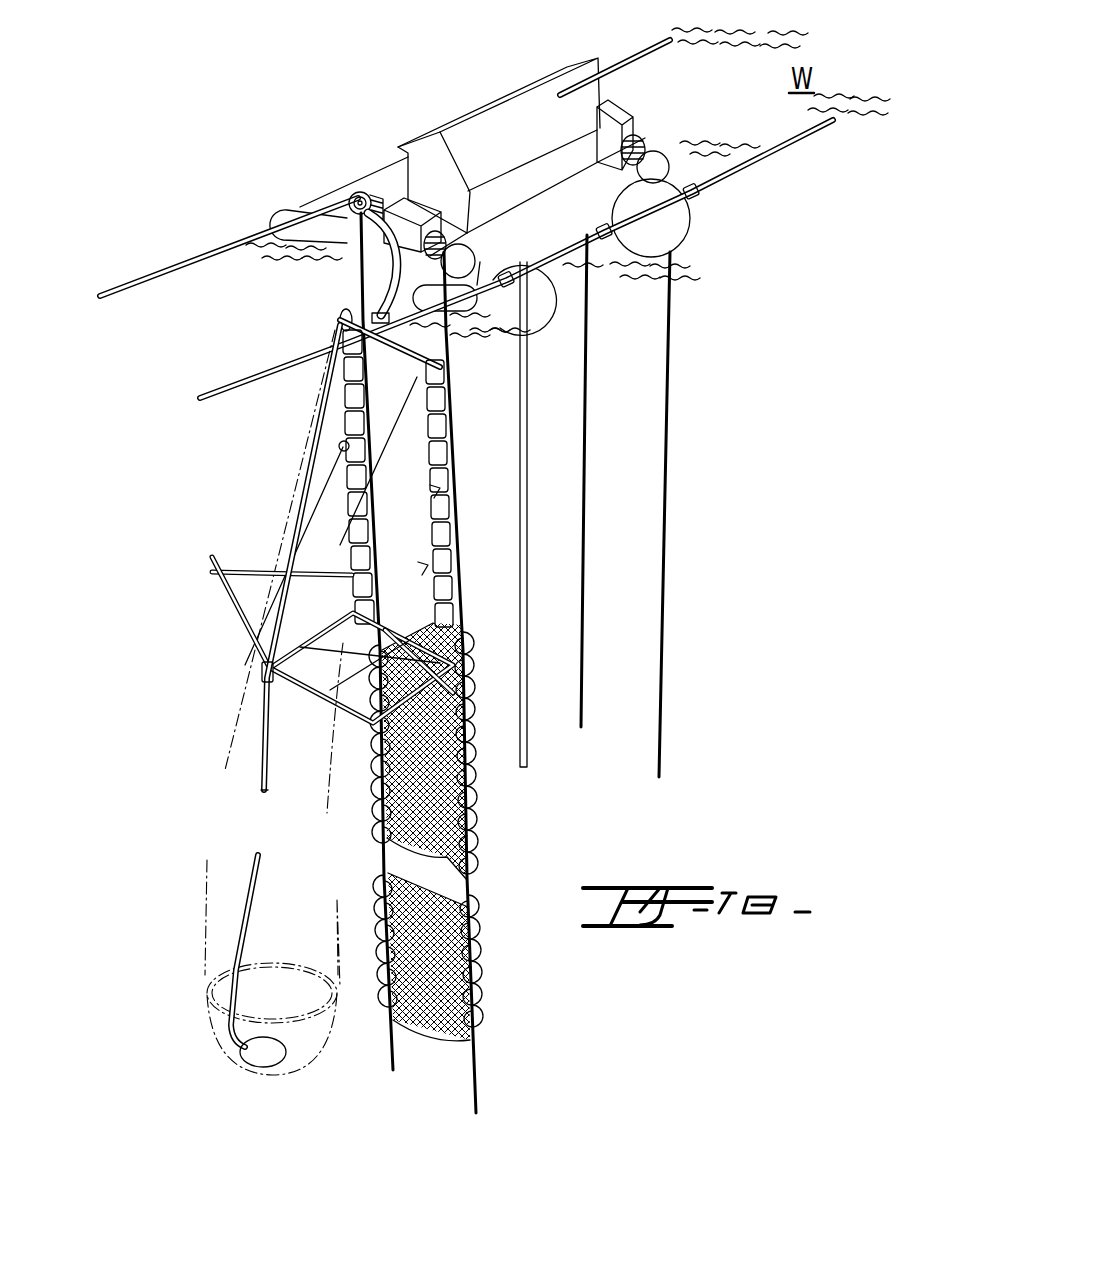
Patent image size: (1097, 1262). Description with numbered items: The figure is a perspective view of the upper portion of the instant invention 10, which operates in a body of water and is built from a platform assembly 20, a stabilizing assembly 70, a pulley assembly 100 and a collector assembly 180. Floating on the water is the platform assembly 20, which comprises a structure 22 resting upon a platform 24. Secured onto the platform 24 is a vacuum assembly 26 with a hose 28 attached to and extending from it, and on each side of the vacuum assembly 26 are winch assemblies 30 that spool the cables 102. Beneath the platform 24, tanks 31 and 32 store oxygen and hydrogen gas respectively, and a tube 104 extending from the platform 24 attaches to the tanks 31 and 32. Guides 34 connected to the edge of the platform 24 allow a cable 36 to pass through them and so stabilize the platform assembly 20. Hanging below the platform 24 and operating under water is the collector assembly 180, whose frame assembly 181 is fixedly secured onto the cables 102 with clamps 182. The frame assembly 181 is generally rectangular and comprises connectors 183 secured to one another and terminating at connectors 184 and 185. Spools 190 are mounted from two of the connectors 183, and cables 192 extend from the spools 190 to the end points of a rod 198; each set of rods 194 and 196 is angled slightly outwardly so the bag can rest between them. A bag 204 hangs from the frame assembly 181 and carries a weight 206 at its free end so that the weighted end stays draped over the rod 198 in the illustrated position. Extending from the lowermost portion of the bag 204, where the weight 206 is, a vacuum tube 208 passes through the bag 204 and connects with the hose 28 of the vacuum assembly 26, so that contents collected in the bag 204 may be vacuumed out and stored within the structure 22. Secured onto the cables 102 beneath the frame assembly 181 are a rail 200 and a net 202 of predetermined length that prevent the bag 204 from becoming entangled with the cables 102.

The instant invention 10 is at (230, 117).
The platform assembly 20 is at (372, 160).
The structure 22 is at (472, 115).
The platform 24 is at (537, 243).
The vacuum assembly 26 is at (612, 100).
The hose 28 is at (654, 135).
The winch assembly 30 is at (645, 165).
The tank 31 is at (533, 332).
The tank 32 is at (660, 233).
The guide 34 is at (694, 194).
The cable 36 is at (210, 256).
The stabilizing assembly 70 is at (154, 261).
The pulley assembly 100 is at (603, 663).
The cable 102 is at (447, 350).
The tube 104 is at (528, 483).
The collector assembly 180 is at (250, 497).
The frame assembly 181 is at (341, 548).
The clamp 182 is at (457, 647).
The connector 183 is at (345, 413).
The connector 184 is at (387, 350).
The connector 185 is at (357, 597).
The spool 190 is at (432, 490).
The cable 192 is at (419, 567).
The rod 194 is at (420, 606).
The rod 196 is at (365, 697).
The rod 198 is at (305, 690).
The rail 200 is at (362, 812).
The net 202 is at (413, 1030).
The bag 204 is at (200, 928).
The weight 206 is at (250, 1070).
The vacuum tube 208 is at (259, 782).